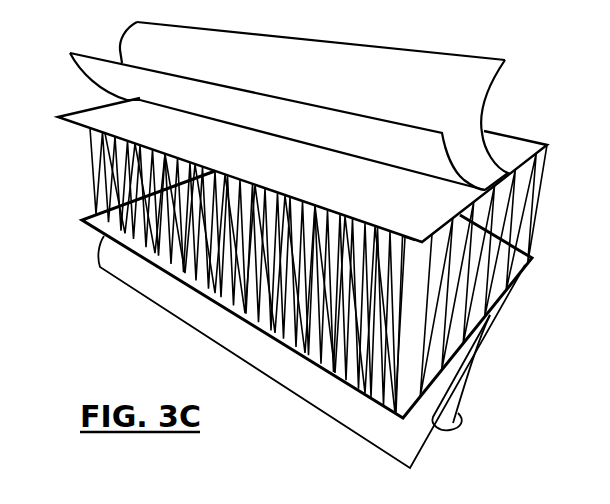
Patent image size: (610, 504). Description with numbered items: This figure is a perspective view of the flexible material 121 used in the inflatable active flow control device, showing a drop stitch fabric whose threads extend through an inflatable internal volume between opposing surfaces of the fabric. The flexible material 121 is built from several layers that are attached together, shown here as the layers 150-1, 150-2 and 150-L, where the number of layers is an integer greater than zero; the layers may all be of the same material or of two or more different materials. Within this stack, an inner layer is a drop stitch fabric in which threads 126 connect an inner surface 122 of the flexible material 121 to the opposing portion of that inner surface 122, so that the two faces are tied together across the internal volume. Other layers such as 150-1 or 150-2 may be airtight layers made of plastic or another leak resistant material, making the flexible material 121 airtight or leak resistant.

The layer 150-1 is at (420, 63).
The layer 150-2 is at (340, 133).
The layer 150-L is at (347, 203).
The threads 126 is at (90, 173).
The inner surface 122 is at (498, 300).
The flexible material 121 is at (515, 100).